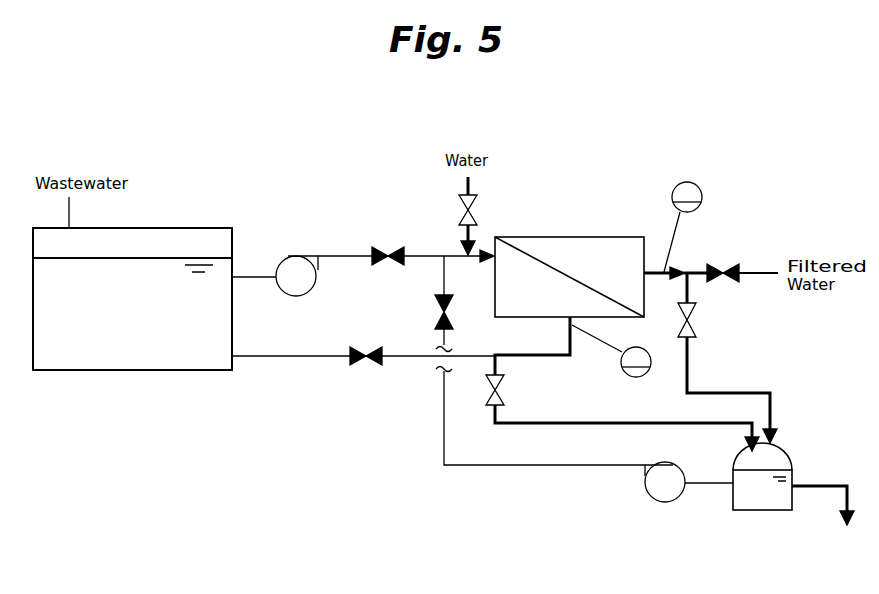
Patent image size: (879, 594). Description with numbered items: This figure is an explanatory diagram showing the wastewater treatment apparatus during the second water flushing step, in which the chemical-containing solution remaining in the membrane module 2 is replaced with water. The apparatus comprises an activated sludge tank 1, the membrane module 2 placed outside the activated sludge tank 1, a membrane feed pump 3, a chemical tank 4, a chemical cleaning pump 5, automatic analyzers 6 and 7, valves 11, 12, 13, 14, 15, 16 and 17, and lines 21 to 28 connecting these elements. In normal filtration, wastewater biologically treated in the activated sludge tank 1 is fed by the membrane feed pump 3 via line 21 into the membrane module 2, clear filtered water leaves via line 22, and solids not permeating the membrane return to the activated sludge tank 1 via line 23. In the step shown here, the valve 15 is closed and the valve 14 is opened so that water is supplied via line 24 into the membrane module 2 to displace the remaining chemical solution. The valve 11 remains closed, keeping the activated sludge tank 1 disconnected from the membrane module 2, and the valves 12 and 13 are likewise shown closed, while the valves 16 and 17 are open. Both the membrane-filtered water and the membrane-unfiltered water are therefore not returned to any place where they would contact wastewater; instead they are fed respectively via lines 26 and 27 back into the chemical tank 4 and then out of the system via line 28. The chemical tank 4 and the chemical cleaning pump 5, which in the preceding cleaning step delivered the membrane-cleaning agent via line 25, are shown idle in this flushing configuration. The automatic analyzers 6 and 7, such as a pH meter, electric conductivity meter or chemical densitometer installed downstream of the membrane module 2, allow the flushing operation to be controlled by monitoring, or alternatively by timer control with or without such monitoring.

The activated sludge tank 1 is at (74, 370).
The membrane module 2 is at (609, 237).
The membrane feed pump 3 is at (300, 250).
The chemical tank 4 is at (763, 512).
The chemical cleaning pump 5 is at (666, 503).
The automatic analyzer 6 is at (701, 187).
The automatic analyzer 7 is at (624, 374).
The valve 11 is at (389, 248).
The valve 12 is at (722, 262).
The valve 13 is at (366, 366).
The valve 14 is at (472, 211).
The valve 15 is at (436, 312).
The valve 16 is at (697, 322).
The valve 17 is at (504, 390).
The line 21 is at (346, 262).
The line 22 is at (757, 275).
The line 23 is at (277, 366).
The line 24 is at (472, 180).
The line 25 is at (500, 468).
The line 26 is at (689, 363).
The line 27 is at (571, 428).
The line 28 is at (829, 485).